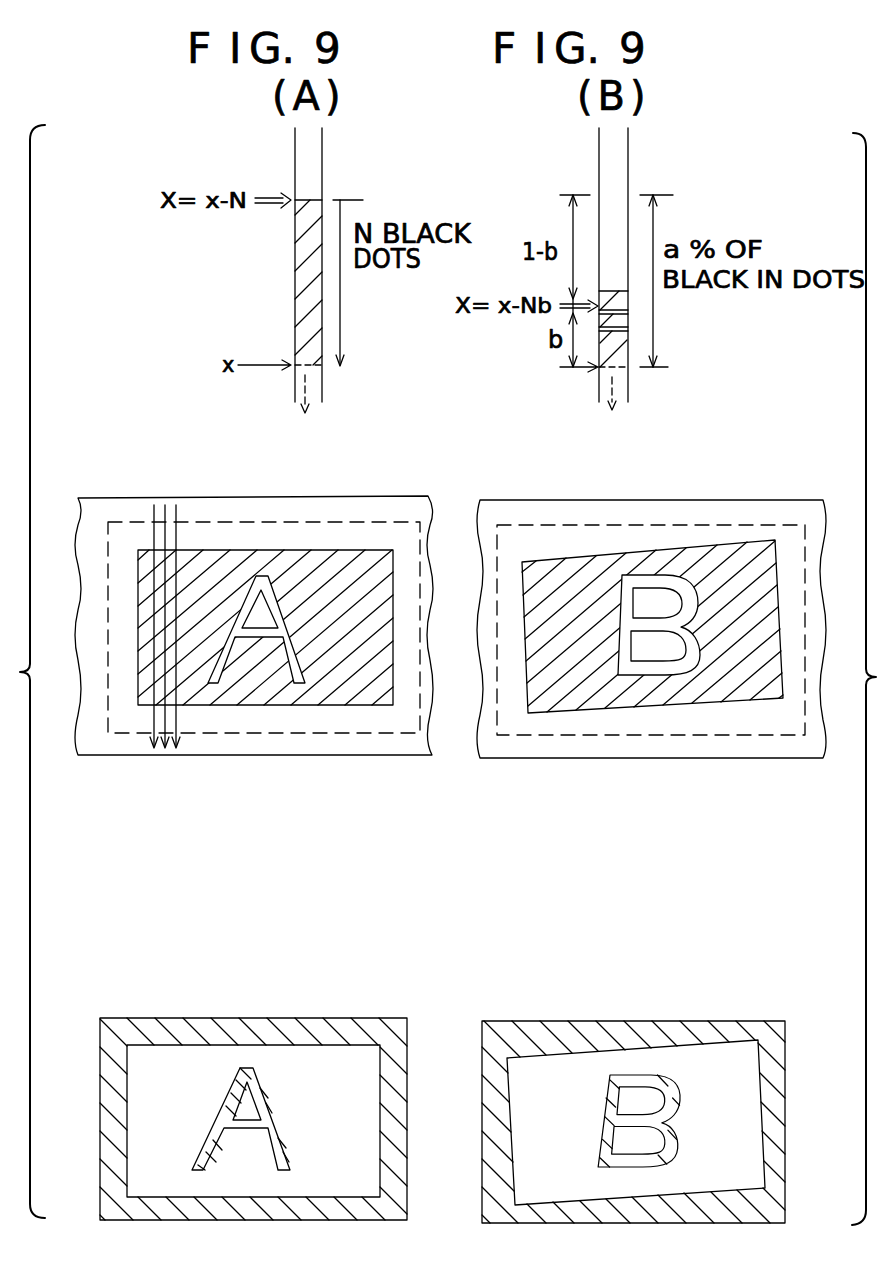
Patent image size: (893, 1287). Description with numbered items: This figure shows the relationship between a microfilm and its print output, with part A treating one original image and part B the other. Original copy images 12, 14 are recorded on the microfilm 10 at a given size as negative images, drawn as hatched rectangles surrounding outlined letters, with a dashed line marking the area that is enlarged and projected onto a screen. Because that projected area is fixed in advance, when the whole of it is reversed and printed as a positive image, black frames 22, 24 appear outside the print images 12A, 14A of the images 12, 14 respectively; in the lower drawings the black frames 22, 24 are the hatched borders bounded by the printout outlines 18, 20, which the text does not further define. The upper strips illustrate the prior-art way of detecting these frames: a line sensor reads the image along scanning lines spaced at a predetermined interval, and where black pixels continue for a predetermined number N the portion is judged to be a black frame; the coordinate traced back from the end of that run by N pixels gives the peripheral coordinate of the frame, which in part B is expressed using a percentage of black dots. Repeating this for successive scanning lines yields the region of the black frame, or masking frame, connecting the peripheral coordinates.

The microfilm 10 is at (520, 758).
The original copy image 12 is at (217, 705).
The original copy image 14 is at (665, 702).
The frame of processed region A 18 is at (122, 1018).
The frame of processed region B 20 is at (508, 1021).
The black frame 22 is at (204, 1040).
The black frame 24 is at (600, 1036).
The print image 12A is at (350, 1043).
The print image 14A is at (742, 1040).